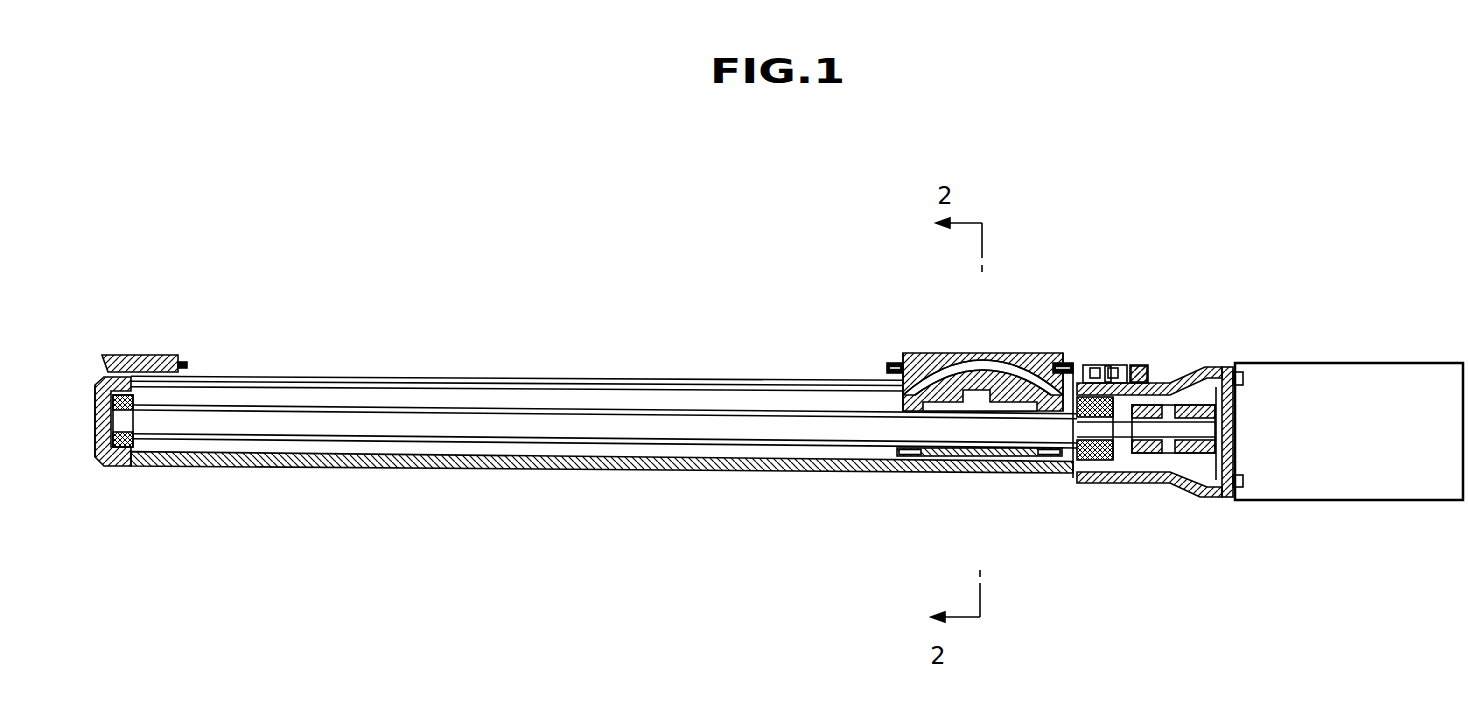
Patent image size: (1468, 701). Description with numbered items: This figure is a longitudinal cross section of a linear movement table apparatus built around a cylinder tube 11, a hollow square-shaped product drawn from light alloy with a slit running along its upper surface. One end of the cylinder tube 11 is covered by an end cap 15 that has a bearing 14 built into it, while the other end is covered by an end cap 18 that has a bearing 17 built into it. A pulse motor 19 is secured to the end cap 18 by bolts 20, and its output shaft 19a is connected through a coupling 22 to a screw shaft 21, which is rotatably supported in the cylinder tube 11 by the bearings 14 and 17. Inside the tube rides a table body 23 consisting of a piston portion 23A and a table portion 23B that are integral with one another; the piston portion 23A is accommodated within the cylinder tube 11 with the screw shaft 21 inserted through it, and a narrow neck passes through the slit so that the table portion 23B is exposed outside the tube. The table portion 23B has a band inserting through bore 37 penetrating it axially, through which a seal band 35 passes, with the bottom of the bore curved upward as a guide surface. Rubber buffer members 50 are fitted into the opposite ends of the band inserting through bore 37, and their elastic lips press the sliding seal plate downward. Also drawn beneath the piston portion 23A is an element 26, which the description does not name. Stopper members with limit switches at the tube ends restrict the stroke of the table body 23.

The cylinder tube 11 is at (314, 366).
The bearing 14 is at (138, 448).
The end cap 15 is at (97, 386).
The bearing 17 is at (1093, 470).
The end cap 18 is at (1113, 477).
The pulse motor 19 is at (1397, 490).
The output shaft 19a is at (1195, 440).
The bolts 20 is at (1240, 480).
The screw shaft 21 is at (494, 432).
The coupling 22 is at (1210, 365).
The table body 23 is at (950, 308).
The piston portion 23A is at (947, 380).
The table portion 23B is at (903, 353).
The guide 26 is at (938, 455).
The seal band 35 is at (563, 378).
The band inserting through bore 37 is at (1026, 355).
The buffer members 50 is at (887, 368).